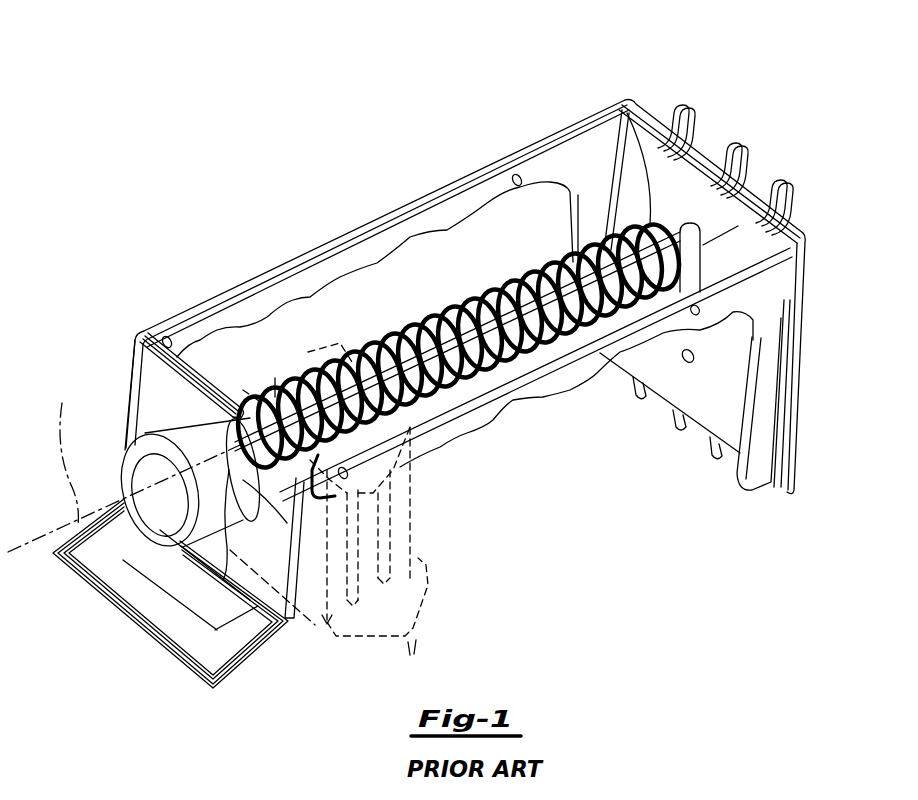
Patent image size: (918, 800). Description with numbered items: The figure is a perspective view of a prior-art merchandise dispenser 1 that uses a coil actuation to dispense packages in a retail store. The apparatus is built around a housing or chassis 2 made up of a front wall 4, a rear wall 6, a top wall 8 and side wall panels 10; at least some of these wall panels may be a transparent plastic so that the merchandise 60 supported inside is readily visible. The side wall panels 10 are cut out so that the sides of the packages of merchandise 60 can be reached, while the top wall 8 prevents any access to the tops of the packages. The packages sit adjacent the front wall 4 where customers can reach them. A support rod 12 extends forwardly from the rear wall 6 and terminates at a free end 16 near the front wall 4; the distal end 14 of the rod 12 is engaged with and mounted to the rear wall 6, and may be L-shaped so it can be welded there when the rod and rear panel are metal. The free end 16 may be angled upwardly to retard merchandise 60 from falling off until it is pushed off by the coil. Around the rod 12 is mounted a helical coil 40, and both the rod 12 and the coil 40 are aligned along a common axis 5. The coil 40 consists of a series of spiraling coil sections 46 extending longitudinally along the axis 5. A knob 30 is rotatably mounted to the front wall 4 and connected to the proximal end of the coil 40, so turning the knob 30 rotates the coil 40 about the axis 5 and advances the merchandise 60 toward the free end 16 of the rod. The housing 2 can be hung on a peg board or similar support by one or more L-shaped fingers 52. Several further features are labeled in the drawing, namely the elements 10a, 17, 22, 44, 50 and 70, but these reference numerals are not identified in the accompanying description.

The merchandise dispenser 1 is at (256, 197).
The housing 2 is at (464, 128).
The front wall 4 is at (136, 383).
The common axis 5 is at (66, 449).
The rear wall 6 is at (797, 285).
The top wall 8 is at (531, 241).
The side wall panels 10 is at (581, 162).
The front plate portion 10a is at (697, 311).
The support rod 12 is at (517, 347).
The distal end 14 is at (683, 232).
The free end 16 is at (223, 580).
The spring front end 17 is at (254, 428).
The anchor bracket 22 is at (290, 553).
The knob 30 is at (168, 503).
The helical coil 40 is at (347, 338).
The corner post 44 is at (623, 104).
The spiraling coil sections 46 is at (565, 262).
The rear leg strip 50 is at (787, 440).
The L-shaped fingers 52 is at (681, 104).
The merchandise 60 is at (335, 513).
The base plate 70 is at (238, 668).